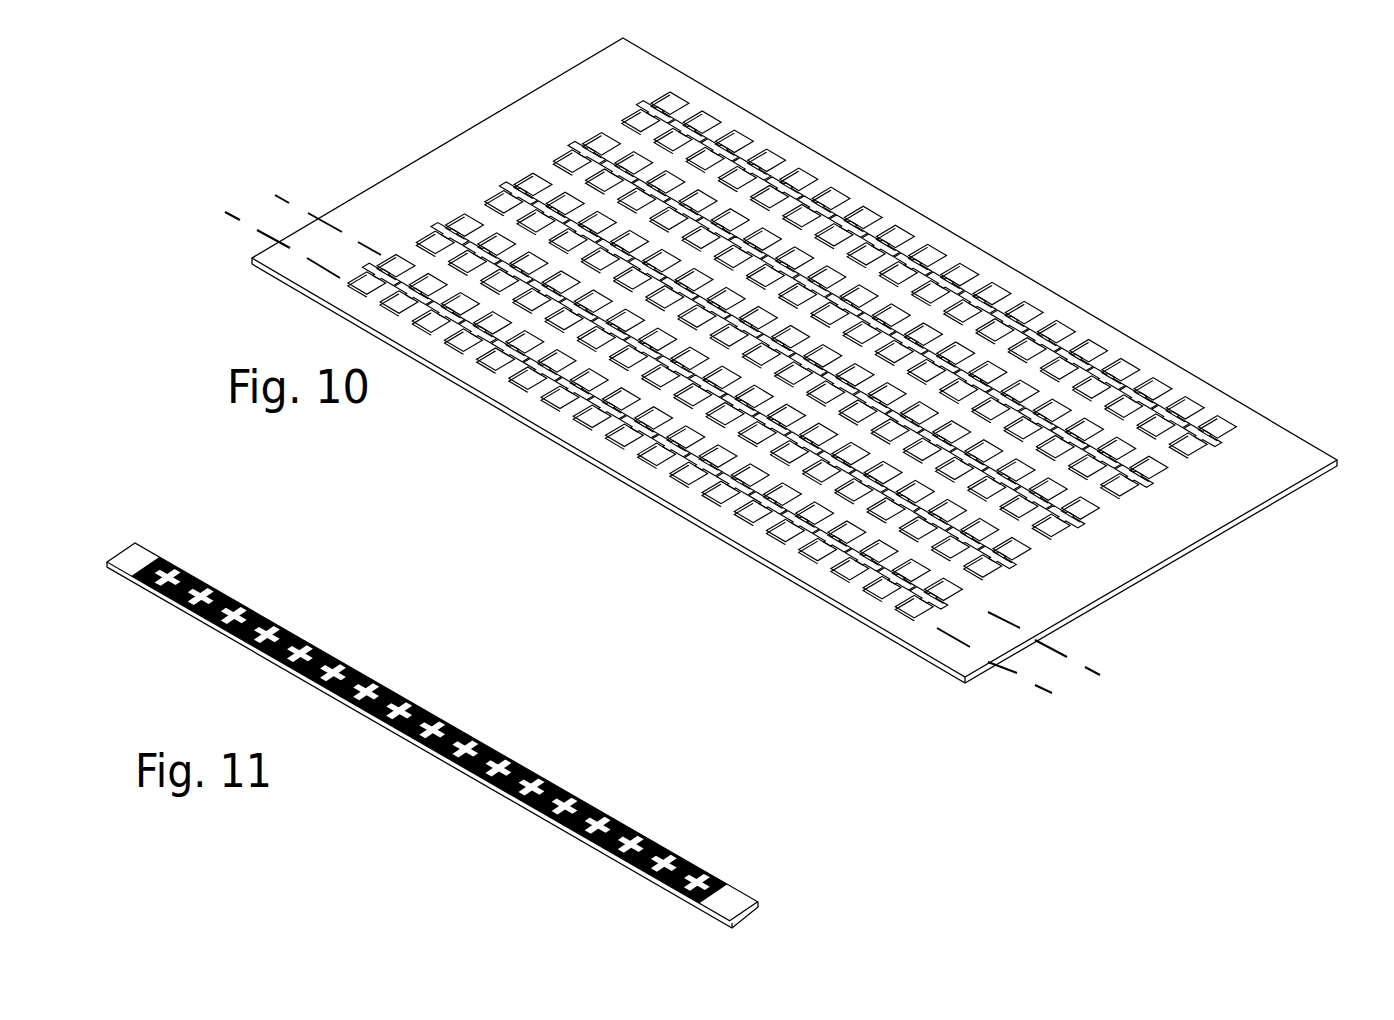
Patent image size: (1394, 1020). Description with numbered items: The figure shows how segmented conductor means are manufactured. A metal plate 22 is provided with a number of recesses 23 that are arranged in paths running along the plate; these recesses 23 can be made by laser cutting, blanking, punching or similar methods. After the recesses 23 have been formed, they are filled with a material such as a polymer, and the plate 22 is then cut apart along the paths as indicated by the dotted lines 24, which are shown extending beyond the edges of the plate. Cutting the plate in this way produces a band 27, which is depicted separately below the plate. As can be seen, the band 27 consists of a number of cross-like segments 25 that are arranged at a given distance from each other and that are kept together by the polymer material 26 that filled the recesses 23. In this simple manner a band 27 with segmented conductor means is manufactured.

In FIG. 10, the metal plate 22 is at (1276, 424).
In FIG. 10, the recesses 23 is at (1023, 310).
In FIG. 10, the dotted lines 24 is at (1037, 686).
In FIG. 11, the cross-like segments 25 is at (643, 835).
In FIG. 11, the polymer material 26 is at (563, 790).
In FIG. 11, the band 27 is at (537, 672).